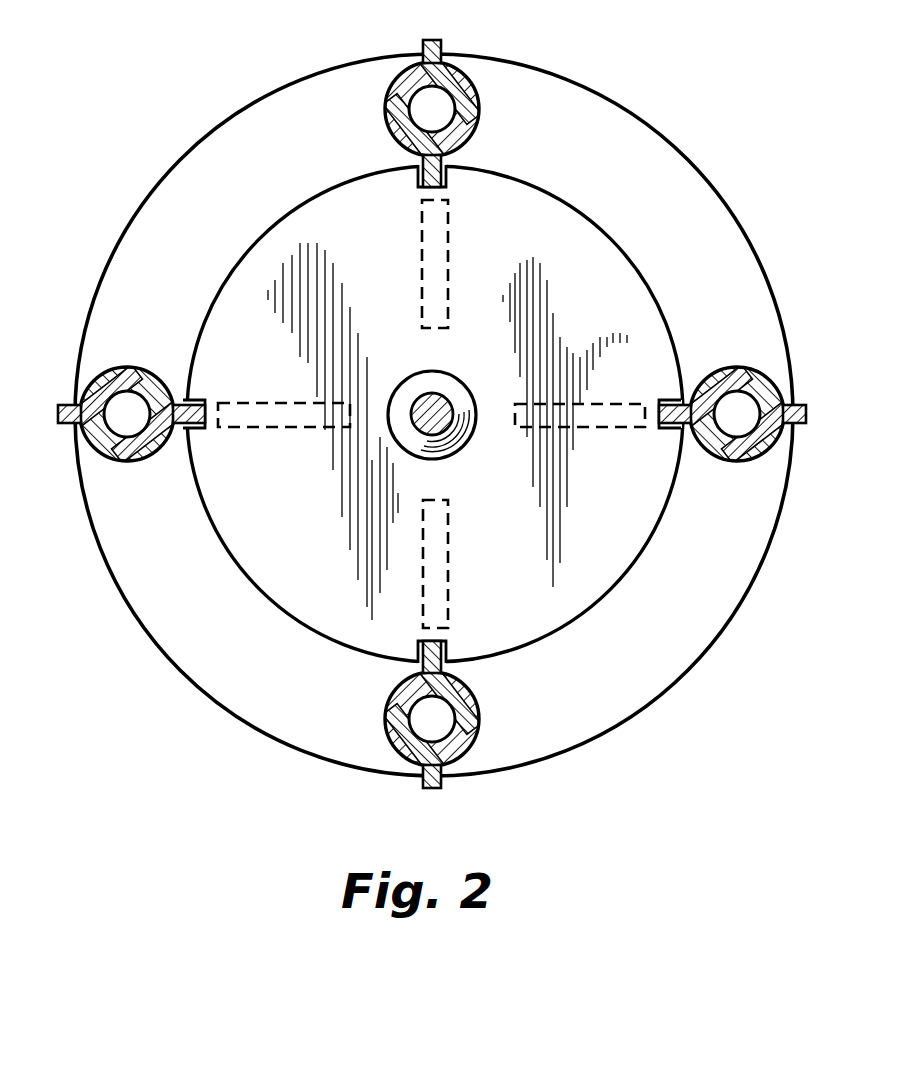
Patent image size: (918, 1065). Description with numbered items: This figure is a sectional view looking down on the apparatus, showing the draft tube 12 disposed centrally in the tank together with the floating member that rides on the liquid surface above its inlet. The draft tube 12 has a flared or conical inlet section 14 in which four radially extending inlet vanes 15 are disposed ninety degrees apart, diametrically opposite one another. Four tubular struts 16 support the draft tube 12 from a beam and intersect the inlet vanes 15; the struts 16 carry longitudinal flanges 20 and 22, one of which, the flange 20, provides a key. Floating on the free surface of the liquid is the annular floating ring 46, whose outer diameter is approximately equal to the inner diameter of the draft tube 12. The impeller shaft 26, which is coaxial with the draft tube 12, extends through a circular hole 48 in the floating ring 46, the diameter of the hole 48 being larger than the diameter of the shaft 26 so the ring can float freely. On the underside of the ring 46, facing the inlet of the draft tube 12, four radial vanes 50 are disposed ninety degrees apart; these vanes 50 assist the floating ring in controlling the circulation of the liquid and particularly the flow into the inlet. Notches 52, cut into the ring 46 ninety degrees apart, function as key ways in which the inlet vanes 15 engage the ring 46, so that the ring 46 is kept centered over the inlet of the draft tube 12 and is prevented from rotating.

The draft tube 12 is at (776, 294).
The inlet section 14 is at (703, 233).
The struts 16 is at (478, 112).
The longitudinal flange 20 is at (441, 170).
The longitudinal flange 22 is at (74, 426).
The inlet vanes 15 is at (420, 185).
The notches 52 is at (449, 186).
The floating ring 46 is at (591, 610).
The circular hole 48 is at (424, 372).
The shaft 26 is at (449, 396).
The radial vanes 50 is at (422, 268).